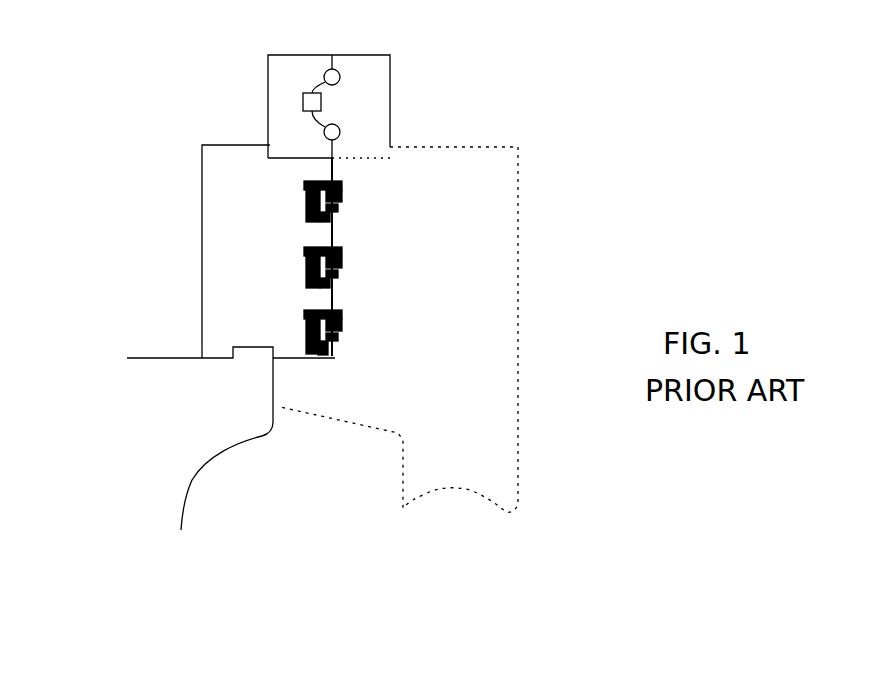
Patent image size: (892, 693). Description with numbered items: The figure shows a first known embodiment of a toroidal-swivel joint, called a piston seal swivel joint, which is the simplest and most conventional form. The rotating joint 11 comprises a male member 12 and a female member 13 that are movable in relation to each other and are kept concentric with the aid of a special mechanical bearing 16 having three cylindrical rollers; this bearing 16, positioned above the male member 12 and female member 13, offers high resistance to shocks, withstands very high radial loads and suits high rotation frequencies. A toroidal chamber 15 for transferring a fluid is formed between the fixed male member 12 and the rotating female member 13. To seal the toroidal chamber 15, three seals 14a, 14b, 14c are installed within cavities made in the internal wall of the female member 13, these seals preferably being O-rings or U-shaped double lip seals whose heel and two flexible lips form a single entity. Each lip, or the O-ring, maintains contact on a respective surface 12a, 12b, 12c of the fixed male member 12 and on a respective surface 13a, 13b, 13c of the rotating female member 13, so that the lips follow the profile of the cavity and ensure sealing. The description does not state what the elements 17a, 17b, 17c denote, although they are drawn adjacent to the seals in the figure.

The rotating joint 11 is at (172, 210).
The male member 12 is at (482, 342).
The surface of the fixed male member 12a is at (345, 334).
The surface of the fixed male member 12b is at (345, 272).
The surface of the fixed male member 12c is at (345, 209).
The female member 13 is at (243, 275).
The surface of the rotating female member 13a is at (273, 348).
The surface of the rotating female member 13b is at (305, 268).
The surface of the rotating female member 13c is at (305, 206).
The seal 14a is at (344, 320).
The seal 14b is at (344, 258).
The seal 14c is at (344, 196).
The toroidal chamber 15 is at (363, 475).
The mechanical bearing 16 is at (372, 105).
The spring a 17a is at (322, 352).
The spring b 17b is at (300, 283).
The spring c 17c is at (308, 190).